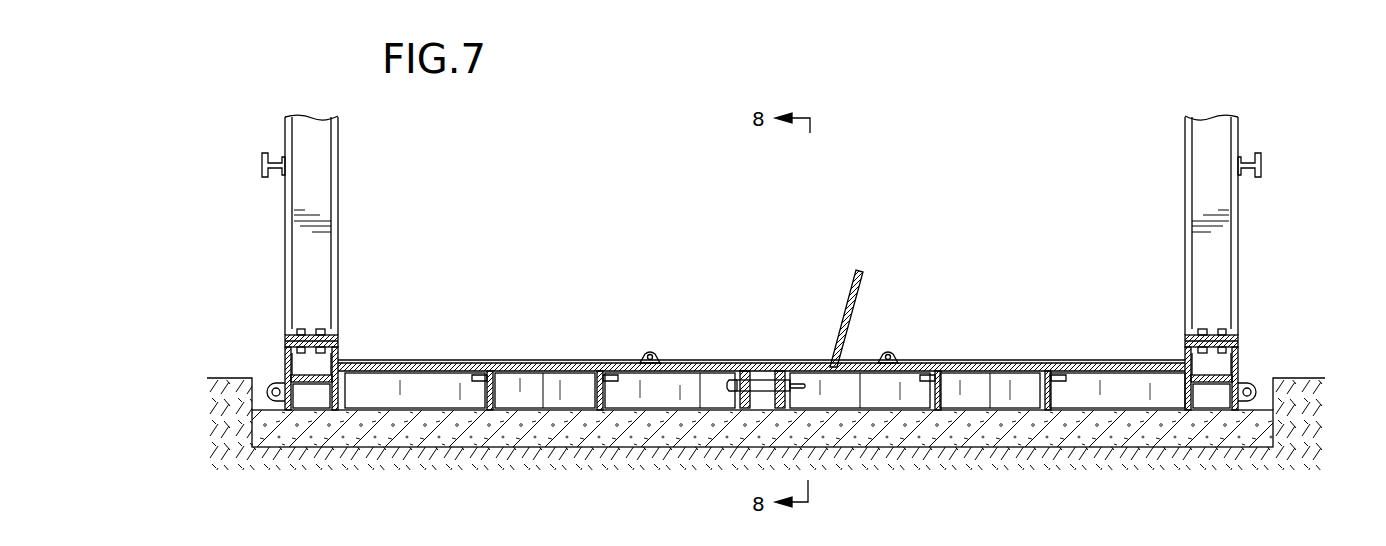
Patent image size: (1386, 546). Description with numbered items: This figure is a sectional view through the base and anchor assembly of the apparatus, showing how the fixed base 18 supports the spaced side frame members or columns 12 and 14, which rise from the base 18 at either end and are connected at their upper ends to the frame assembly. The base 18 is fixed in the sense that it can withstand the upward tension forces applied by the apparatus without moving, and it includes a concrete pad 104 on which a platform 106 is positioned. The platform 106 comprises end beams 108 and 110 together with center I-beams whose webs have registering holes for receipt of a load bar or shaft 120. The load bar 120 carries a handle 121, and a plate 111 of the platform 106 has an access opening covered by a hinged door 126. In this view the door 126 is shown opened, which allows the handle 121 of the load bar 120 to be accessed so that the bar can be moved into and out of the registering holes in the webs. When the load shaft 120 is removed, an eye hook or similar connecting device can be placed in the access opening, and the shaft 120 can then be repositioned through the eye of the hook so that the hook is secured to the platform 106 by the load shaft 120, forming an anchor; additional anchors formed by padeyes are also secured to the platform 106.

The first side frame member 12 is at (255, 238).
The second side frame member 14 is at (1282, 214).
The base 18 is at (434, 284).
The concrete pad 104 is at (1112, 425).
The platform 106 is at (761, 358).
The end beam 108 is at (1250, 365).
The end beam 110 is at (315, 384).
The plate 111 is at (1056, 366).
The load bar 120 is at (762, 385).
The handle 121 is at (805, 388).
The hinged door 126 is at (851, 286).